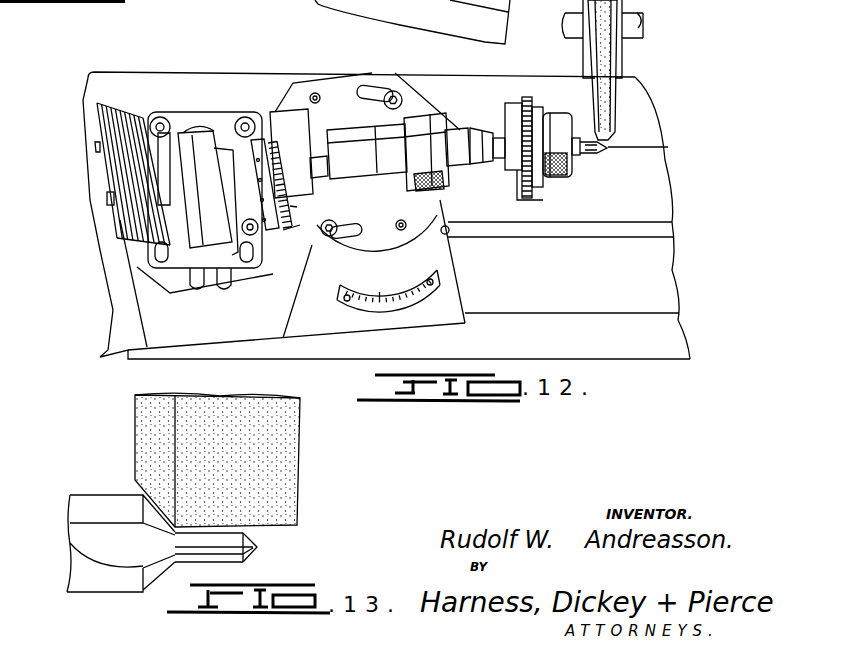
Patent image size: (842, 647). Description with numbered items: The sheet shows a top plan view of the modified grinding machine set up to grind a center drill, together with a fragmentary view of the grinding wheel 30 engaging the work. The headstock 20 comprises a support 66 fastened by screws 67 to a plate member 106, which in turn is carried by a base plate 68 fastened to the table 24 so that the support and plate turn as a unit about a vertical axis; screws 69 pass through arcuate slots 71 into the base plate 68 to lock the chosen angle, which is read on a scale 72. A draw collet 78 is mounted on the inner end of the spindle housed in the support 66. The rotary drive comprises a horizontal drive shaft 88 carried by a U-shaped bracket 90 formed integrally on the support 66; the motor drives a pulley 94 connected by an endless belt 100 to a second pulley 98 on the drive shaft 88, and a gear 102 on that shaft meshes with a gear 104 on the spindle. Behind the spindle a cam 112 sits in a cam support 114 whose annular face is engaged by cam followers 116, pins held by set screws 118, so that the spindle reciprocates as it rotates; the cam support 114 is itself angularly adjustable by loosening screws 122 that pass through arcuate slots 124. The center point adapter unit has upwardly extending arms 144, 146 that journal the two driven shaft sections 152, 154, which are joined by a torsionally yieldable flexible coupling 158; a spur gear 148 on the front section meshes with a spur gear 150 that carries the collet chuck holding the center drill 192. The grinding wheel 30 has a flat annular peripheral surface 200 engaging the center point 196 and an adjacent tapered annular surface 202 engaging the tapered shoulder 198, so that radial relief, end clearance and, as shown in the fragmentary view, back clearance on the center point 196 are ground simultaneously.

In FIG. 12, the headstock 20 is at (254, 77).
In FIG. 12, the table 24 is at (665, 268).
In FIG. 12, the grinding wheel 30 is at (620, 92).
In FIG. 13, the grinding wheel 30 is at (288, 440).
In FIG. 12, the support 66 is at (337, 127).
In FIG. 12, the screws 67 is at (312, 94).
In FIG. 12, the base plate 68 is at (455, 281).
In FIG. 12, the screws 69 is at (394, 92).
In FIG. 12, the arcuate slots 71 is at (375, 85).
In FIG. 12, the scale 72 is at (404, 300).
In FIG. 12, the draw collet 78 is at (390, 123).
In FIG. 12, the drive shaft 88 is at (108, 201).
In FIG. 12, the U-shaped bracket 90 is at (272, 110).
In FIG. 12, the pulley 94 is at (98, 116).
In FIG. 12, the second pulley 98 is at (123, 218).
In FIG. 12, the endless belt 100 is at (145, 165).
In FIG. 12, the gear 102 is at (280, 156).
In FIG. 12, the gear 104 is at (266, 133).
In FIG. 12, the plate member 106 is at (430, 257).
In FIG. 12, the cam 112 is at (227, 157).
In FIG. 12, the cam support 114 is at (198, 147).
In FIG. 12, the cam followers 116 is at (243, 222).
In FIG. 12, the set screws 118 is at (297, 207).
In FIG. 12, the screws 122 is at (200, 285).
In FIG. 12, the arcuate slots 124 is at (222, 275).
In FIG. 12, the arm 144 is at (413, 168).
In FIG. 12, the arm 146 is at (513, 130).
In FIG. 12, the spur gear 148 is at (527, 98).
In FIG. 12, the spur gear 150 is at (535, 193).
In FIG. 12, the driven shaft section 152 is at (472, 134).
In FIG. 12, the driven shaft section 154 is at (505, 150).
In FIG. 12, the flexible coupling 158 is at (490, 130).
In FIG. 12, the center drill 192 is at (583, 152).
In FIG. 13, the center drill 192 is at (90, 503).
In FIG. 12, the center point 196 is at (603, 140).
In FIG. 13, the center point 196 is at (232, 556).
In FIG. 12, the tapered shoulder 198 is at (600, 136).
In FIG. 13, the tapered shoulder 198 is at (165, 582).
In FIG. 12, the flat annular peripheral surface 200 is at (612, 52).
In FIG. 13, the flat annular peripheral surface 200 is at (278, 530).
In FIG. 12, the tapered annular surface 202 is at (597, 53).
In FIG. 13, the tapered annular surface 202 is at (145, 413).